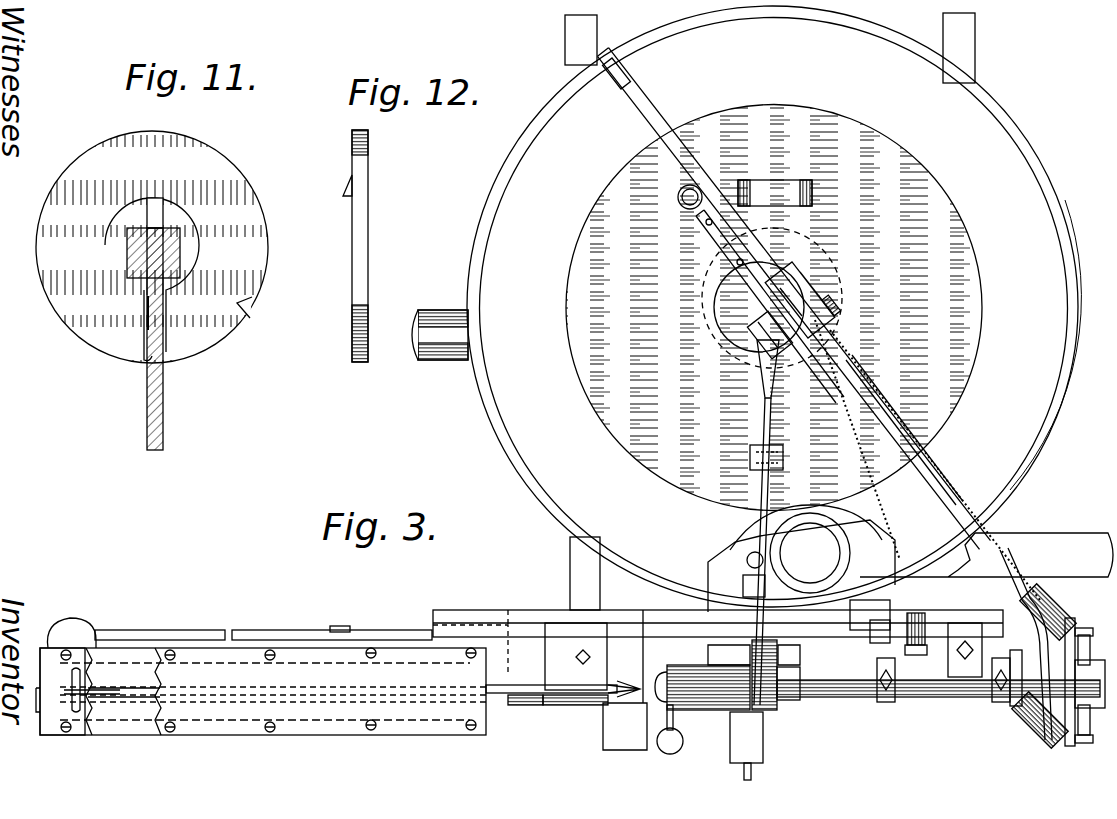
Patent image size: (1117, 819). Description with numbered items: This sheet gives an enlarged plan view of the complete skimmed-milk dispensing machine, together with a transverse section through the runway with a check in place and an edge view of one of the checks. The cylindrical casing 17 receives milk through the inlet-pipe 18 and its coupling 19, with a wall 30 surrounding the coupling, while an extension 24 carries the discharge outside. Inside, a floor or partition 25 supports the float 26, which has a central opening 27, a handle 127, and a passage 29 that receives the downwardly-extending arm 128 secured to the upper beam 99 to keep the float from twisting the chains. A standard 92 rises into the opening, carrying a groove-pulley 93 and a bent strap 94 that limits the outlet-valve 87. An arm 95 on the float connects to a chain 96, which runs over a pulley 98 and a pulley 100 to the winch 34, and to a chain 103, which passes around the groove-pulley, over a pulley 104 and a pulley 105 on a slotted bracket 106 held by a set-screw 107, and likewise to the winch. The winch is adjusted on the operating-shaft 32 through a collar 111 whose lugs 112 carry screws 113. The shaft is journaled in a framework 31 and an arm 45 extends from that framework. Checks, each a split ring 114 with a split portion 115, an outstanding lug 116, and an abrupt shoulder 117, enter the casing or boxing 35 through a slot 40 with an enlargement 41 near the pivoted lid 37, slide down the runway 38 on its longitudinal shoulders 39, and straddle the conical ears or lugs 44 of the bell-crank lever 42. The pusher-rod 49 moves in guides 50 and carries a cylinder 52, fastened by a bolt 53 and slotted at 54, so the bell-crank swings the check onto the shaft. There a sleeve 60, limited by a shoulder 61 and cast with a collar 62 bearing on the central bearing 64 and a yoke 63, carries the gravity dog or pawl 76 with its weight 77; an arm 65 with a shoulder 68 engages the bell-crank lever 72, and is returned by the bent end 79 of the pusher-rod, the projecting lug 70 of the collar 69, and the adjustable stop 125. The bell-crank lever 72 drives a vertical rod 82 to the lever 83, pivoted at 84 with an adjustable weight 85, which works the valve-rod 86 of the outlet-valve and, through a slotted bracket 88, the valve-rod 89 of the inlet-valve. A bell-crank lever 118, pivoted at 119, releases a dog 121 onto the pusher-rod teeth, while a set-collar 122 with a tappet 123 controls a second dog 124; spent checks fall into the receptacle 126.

In FIG. 3, the casing 17 is at (486, 412).
In FIG. 3, the inlet-pipe 18 is at (1025, 533).
In FIG. 3, the coupling 19 is at (758, 540).
In FIG. 3, the extension 24 is at (440, 312).
In FIG. 3, the floor or partition 25 is at (1026, 360).
In FIG. 3, the float 26 is at (572, 392).
In FIG. 3, the central opening 27 is at (808, 255).
In FIG. 3, the passage 29 is at (945, 450).
In FIG. 3, the wall 30 is at (730, 545).
In FIG. 3, the framework 31 is at (528, 612).
In FIG. 3, the operating-shaft 32 is at (935, 700).
In FIG. 3, the winch 34 is at (1075, 625).
In FIG. 3, the casing or boxing 35 is at (230, 730).
In FIG. 3, the pivoted lid 37 is at (40, 735).
In FIG. 11, the runway 38 is at (163, 402).
In FIG. 3, the runway 38 is at (122, 700).
In FIG. 11, the longitudinal shoulders 39 is at (160, 230).
In FIG. 3, the longitudinal shoulders 39 is at (100, 688).
In FIG. 3, the slot 40 is at (100, 680).
In FIG. 3, the enlargement 41 is at (40, 660).
In FIG. 3, the bell-crank lever 42 is at (600, 712).
In FIG. 3, the conical ears or lugs 44 is at (618, 680).
In FIG. 3, the arm 45 is at (660, 665).
In FIG. 3, the pusher-rod 49 is at (285, 630).
In FIG. 3, the guides 50 is at (918, 640).
In FIG. 3, the cylinder 52 is at (555, 705).
In FIG. 3, the bolt 53 is at (548, 630).
In FIG. 3, the slot 54 is at (525, 705).
In FIG. 3, the sleeve 60 is at (700, 715).
In FIG. 3, the shoulder 61 is at (700, 665).
In FIG. 3, the collar 62 is at (790, 705).
In FIG. 3, the yoke 63 is at (775, 712).
In FIG. 3, the central bearing 64 is at (800, 700).
In FIG. 3, the arm 65 is at (890, 620).
In FIG. 3, the shoulder 68 is at (877, 695).
In FIG. 3, the collar 69 is at (880, 680).
In FIG. 3, the projecting lug 70 is at (917, 656).
In FIG. 3, the bell-crank lever 72 is at (872, 700).
In FIG. 3, the gravity dog or pawl 76 is at (667, 715).
In FIG. 3, the weight 77 is at (672, 754).
In FIG. 3, the bent end 79 is at (958, 698).
In FIG. 3, the vertical rod 82 is at (743, 585).
In FIG. 3, the lever 83 is at (765, 424).
In FIG. 3, the pivot 84 is at (750, 455).
In FIG. 3, the adjustable weight 85 is at (746, 746).
In FIG. 3, the valve-rod 86 is at (748, 338).
In FIG. 3, the outlet-valve 87 is at (716, 320).
In FIG. 3, the slotted bracket 88 is at (772, 558).
In FIG. 3, the valve-rod 89 is at (778, 580).
In FIG. 3, the standard 92 is at (825, 278).
In FIG. 3, the groove-pulley 93 is at (790, 262).
In FIG. 3, the bent strap 94 is at (702, 298).
In FIG. 3, the arm 95 is at (725, 268).
In FIG. 3, the chain 96 is at (830, 370).
In FIG. 3, the pulley 98 is at (760, 360).
In FIG. 3, the upper beam 99 is at (950, 480).
In FIG. 11, the pulley 100 is at (155, 158).
In FIG. 3, the pulley 100 is at (1040, 740).
In FIG. 3, the chain 103 is at (866, 358).
In FIG. 3, the pulley 104 is at (836, 310).
In FIG. 3, the pulley 105 is at (1050, 603).
In FIG. 3, the slotted bracket 106 is at (1028, 580).
In FIG. 3, the set-screw 107 is at (1010, 575).
In FIG. 3, the collar 111 is at (1102, 710).
In FIG. 3, the lugs 112 is at (1098, 660).
In FIG. 3, the screws 113 is at (1093, 689).
In FIG. 11, the split ring 114 is at (262, 268).
In FIG. 12, the split ring 114 is at (368, 244).
In FIG. 11, the split portion 115 is at (147, 332).
In FIG. 11, the outstanding lug 116 is at (163, 200).
In FIG. 12, the outstanding lug 116 is at (346, 190).
In FIG. 11, the abrupt shoulder 117 is at (243, 306).
In FIG. 12, the abrupt shoulder 117 is at (362, 313).
In FIG. 3, the bell-crank lever 118 is at (868, 600).
In FIG. 3, the pivot point 119 is at (850, 610).
In FIG. 3, the dog 121 is at (840, 620).
In FIG. 3, the set-collar 122 is at (1016, 706).
In FIG. 3, the tappet 123 is at (998, 702).
In FIG. 3, the dog 124 is at (1000, 545).
In FIG. 3, the adjustable stop 125 is at (935, 700).
In FIG. 3, the receptacle 126 is at (606, 745).
In FIG. 3, the handle 127 is at (815, 190).
In FIG. 3, the arm 128 is at (895, 402).